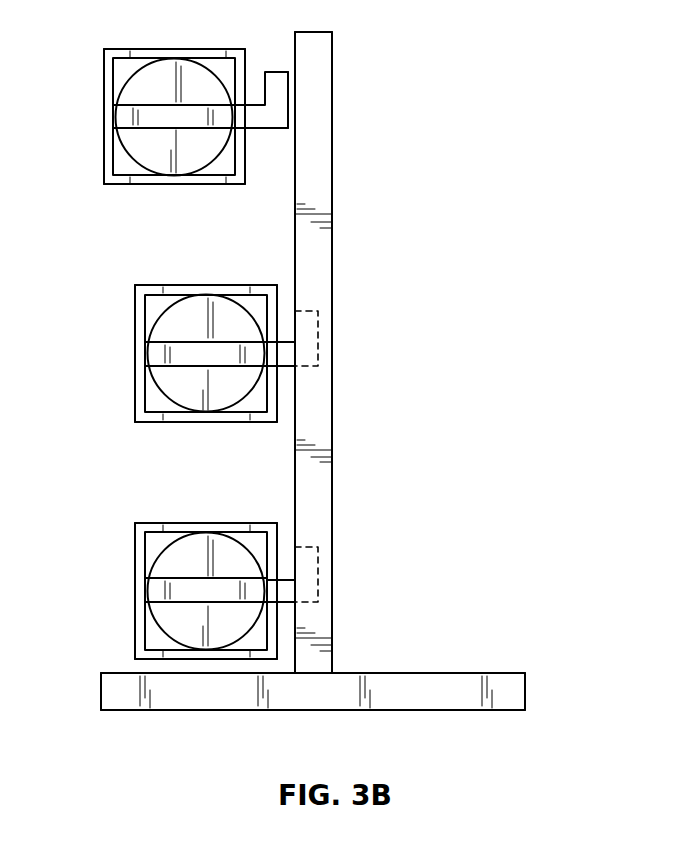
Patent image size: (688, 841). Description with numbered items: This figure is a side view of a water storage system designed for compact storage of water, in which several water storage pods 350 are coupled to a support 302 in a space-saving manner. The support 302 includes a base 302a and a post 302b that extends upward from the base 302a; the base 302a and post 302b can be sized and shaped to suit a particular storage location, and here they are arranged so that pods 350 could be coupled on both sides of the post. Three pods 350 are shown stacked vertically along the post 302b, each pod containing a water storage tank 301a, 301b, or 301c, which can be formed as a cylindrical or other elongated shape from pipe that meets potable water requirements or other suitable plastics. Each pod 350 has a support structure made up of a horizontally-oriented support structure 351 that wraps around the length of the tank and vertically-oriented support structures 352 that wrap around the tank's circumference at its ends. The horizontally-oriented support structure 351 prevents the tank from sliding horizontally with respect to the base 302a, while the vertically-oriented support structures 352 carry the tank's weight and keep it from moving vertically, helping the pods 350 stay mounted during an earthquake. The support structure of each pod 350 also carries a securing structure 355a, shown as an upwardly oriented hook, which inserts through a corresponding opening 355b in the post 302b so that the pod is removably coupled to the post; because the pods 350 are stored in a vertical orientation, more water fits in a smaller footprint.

The water storage tank 301a is at (167, 77).
The water storage tank 301b is at (188, 313).
The water storage tank 301c is at (195, 557).
The support 302 is at (112, 722).
The base 302a is at (525, 688).
The post 302b is at (332, 48).
The water storage pod 350 is at (117, 190).
The horizontally-oriented support structure 351 is at (125, 115).
The vertically-oriented support structure 352 is at (104, 85).
The securing structure 355a is at (280, 88).
The opening 355b is at (297, 123).